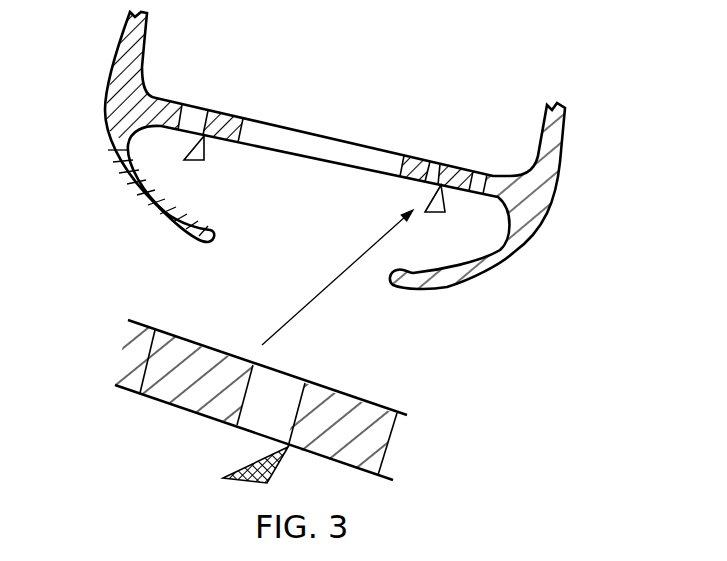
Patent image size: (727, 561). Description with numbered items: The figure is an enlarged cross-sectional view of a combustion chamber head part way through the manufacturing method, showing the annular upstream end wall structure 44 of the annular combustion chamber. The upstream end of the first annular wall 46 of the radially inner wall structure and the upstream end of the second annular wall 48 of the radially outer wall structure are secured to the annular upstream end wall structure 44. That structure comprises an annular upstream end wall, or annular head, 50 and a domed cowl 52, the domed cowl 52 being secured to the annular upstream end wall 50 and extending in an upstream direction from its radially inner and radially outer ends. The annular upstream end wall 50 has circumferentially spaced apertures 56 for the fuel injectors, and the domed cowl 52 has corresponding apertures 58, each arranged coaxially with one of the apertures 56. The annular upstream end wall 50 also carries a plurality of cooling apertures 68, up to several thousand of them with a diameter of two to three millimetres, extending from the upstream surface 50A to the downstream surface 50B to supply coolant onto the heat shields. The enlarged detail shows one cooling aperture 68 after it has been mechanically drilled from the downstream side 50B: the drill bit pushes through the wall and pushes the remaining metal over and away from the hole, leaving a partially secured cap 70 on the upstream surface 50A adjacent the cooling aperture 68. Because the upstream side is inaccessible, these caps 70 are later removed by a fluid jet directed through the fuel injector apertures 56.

The annular upstream end wall structure 44 is at (560, 226).
The first annular wall 46 is at (565, 130).
The second annular wall 48 is at (122, 43).
The annular upstream end wall 50 is at (552, 180).
The upstream surface 50A is at (158, 122).
The downstream surface 50B is at (157, 100).
The domed cowl 52 is at (150, 210).
The apertures 56 is at (397, 160).
The apertures 58 is at (384, 273).
The cooling apertures 68 is at (195, 113).
The caps 70 is at (248, 467).